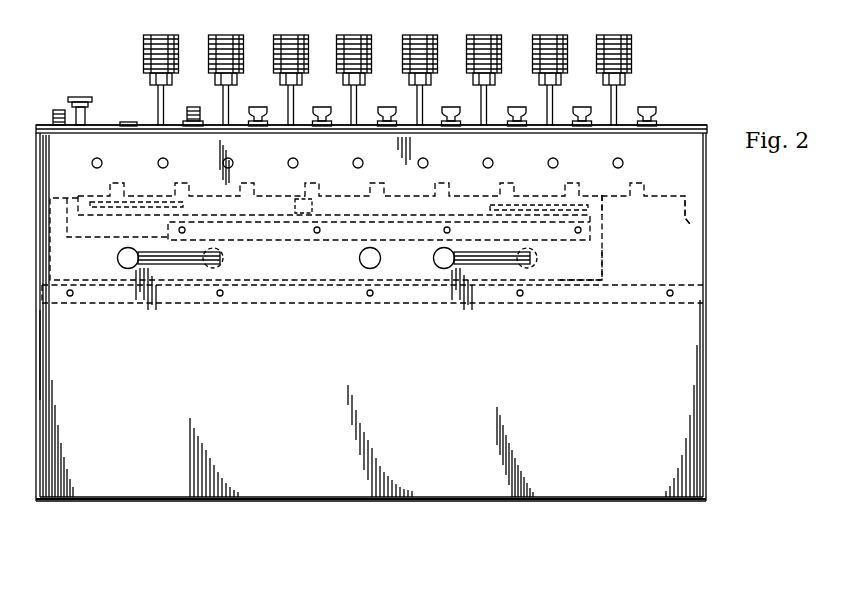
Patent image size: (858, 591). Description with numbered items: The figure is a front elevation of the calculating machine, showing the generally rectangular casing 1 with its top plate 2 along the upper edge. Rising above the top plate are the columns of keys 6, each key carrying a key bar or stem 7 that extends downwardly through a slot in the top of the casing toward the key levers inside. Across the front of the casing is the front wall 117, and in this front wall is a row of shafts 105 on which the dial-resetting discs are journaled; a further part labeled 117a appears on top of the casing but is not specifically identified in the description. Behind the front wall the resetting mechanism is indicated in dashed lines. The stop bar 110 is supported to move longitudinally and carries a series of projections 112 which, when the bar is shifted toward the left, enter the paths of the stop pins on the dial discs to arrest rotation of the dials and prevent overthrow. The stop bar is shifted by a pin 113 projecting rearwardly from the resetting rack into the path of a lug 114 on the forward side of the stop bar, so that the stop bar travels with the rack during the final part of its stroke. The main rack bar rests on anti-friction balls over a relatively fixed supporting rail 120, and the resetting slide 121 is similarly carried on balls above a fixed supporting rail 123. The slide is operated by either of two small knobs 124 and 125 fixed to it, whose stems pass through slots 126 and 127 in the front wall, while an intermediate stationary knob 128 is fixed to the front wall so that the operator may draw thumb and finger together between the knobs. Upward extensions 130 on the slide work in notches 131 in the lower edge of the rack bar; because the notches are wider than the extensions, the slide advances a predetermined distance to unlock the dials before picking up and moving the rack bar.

The casing 1 is at (704, 412).
The top plate 2 is at (690, 131).
The keys 6 is at (152, 35).
The key bar or stem 7 is at (157, 99).
The shafts 105 is at (102, 163).
The stop bar 110 is at (695, 223).
The projections 112 is at (124, 190).
The pin 113 is at (314, 207).
The lug 114 is at (294, 207).
The front wall 117 is at (58, 346).
The ribbed post 117a is at (193, 106).
The supporting rail 120 is at (586, 240).
The slide 121 is at (606, 274).
The supporting rail 123 is at (322, 303).
The knob 124 is at (117, 258).
The knob 125 is at (433, 258).
The slot 126 is at (173, 264).
The slot 127 is at (488, 264).
The stationary knob 128 is at (359, 258).
The upward extensions 130 is at (50, 224).
The notches 131 is at (82, 191).